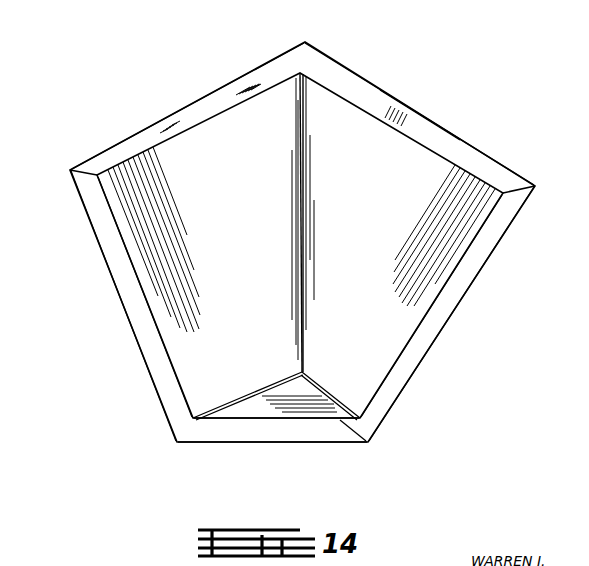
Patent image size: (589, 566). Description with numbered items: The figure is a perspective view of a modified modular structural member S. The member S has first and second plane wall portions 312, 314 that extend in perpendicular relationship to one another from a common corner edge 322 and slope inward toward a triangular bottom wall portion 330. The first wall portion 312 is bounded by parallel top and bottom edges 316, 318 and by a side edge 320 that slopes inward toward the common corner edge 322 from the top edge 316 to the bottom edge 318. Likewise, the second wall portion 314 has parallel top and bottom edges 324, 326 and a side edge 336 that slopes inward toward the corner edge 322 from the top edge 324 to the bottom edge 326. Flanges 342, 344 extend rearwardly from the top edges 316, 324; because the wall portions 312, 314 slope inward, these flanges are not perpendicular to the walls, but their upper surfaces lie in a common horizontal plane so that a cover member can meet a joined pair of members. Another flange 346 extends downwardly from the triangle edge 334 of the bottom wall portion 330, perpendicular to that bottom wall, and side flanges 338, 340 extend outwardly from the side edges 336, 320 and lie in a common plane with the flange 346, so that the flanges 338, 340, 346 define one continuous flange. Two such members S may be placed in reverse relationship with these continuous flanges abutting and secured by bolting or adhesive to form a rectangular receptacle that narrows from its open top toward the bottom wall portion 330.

The modular structural member S is at (488, 124).
The first plane wall portion 312 is at (192, 155).
The second plane wall portion 314 is at (456, 177).
The top edge 316 is at (228, 112).
The bottom edge 318 is at (245, 396).
The side edge 320 is at (127, 247).
The common corner edge 322 is at (300, 90).
The top edge 324 is at (352, 106).
The bottom edge 326 is at (358, 362).
The triangular bottom wall portion 330 is at (282, 408).
The triangle edge 334 is at (333, 420).
The side edge 336 is at (428, 296).
The side flange 338 is at (490, 233).
The side flange 340 is at (133, 302).
The flange 342 is at (131, 146).
The flange 344 is at (418, 125).
The flange 346 is at (232, 433).